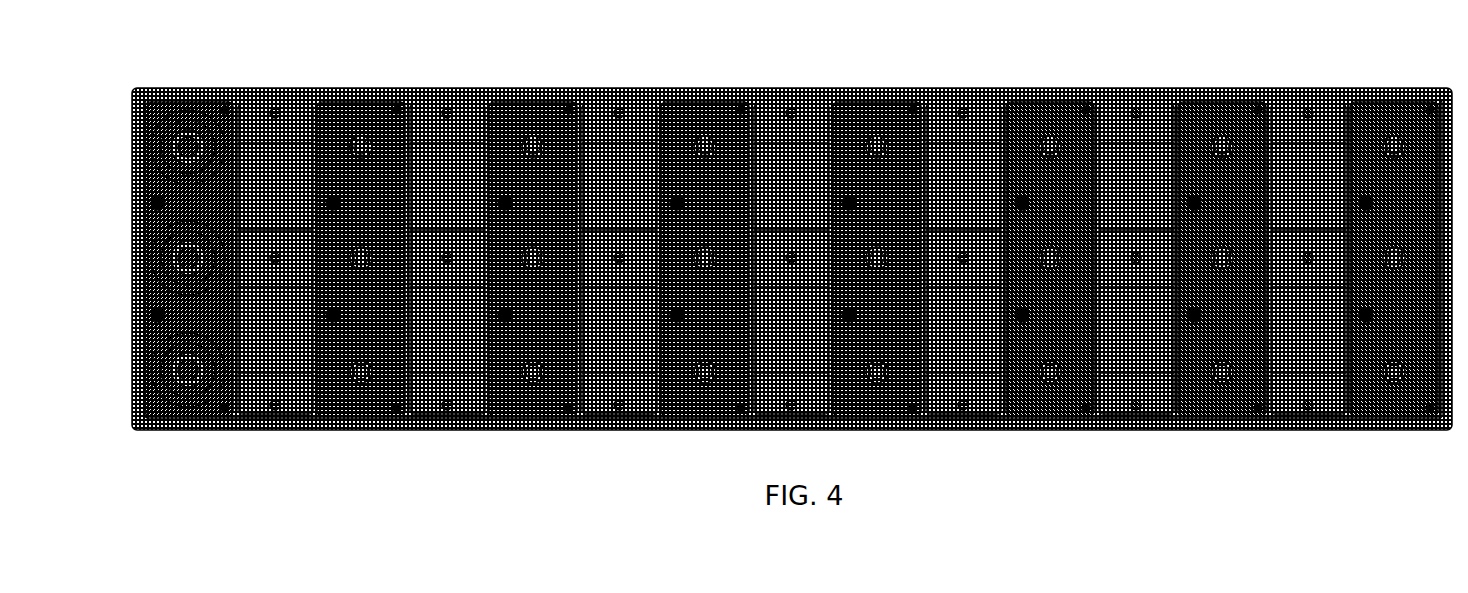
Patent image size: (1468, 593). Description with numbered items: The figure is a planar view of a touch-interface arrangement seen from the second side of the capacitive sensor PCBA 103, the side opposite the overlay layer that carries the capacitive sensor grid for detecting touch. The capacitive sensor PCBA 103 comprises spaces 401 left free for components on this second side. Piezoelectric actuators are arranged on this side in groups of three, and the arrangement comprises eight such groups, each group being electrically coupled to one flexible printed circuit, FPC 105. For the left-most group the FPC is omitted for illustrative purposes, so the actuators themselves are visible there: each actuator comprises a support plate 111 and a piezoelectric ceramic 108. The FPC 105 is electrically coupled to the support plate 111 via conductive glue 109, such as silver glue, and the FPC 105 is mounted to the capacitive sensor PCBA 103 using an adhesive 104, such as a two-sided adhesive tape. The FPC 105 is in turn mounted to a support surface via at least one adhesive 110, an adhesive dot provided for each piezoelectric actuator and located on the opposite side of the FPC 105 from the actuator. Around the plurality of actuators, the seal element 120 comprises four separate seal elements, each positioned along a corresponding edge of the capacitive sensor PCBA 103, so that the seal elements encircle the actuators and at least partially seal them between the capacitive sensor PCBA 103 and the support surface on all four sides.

The spaces 401 is at (608, 93).
The support plate 111 is at (172, 106).
The piezoelectric ceramic 108 is at (190, 135).
The conductive glue 109 is at (187, 147).
The adhesive 104 is at (167, 227).
The seal element 120 is at (290, 87).
The flexible printed circuit 105 is at (344, 120).
The adhesive 110 is at (387, 130).
The capacitive sensor printed circuit board assembly 103 is at (467, 107).